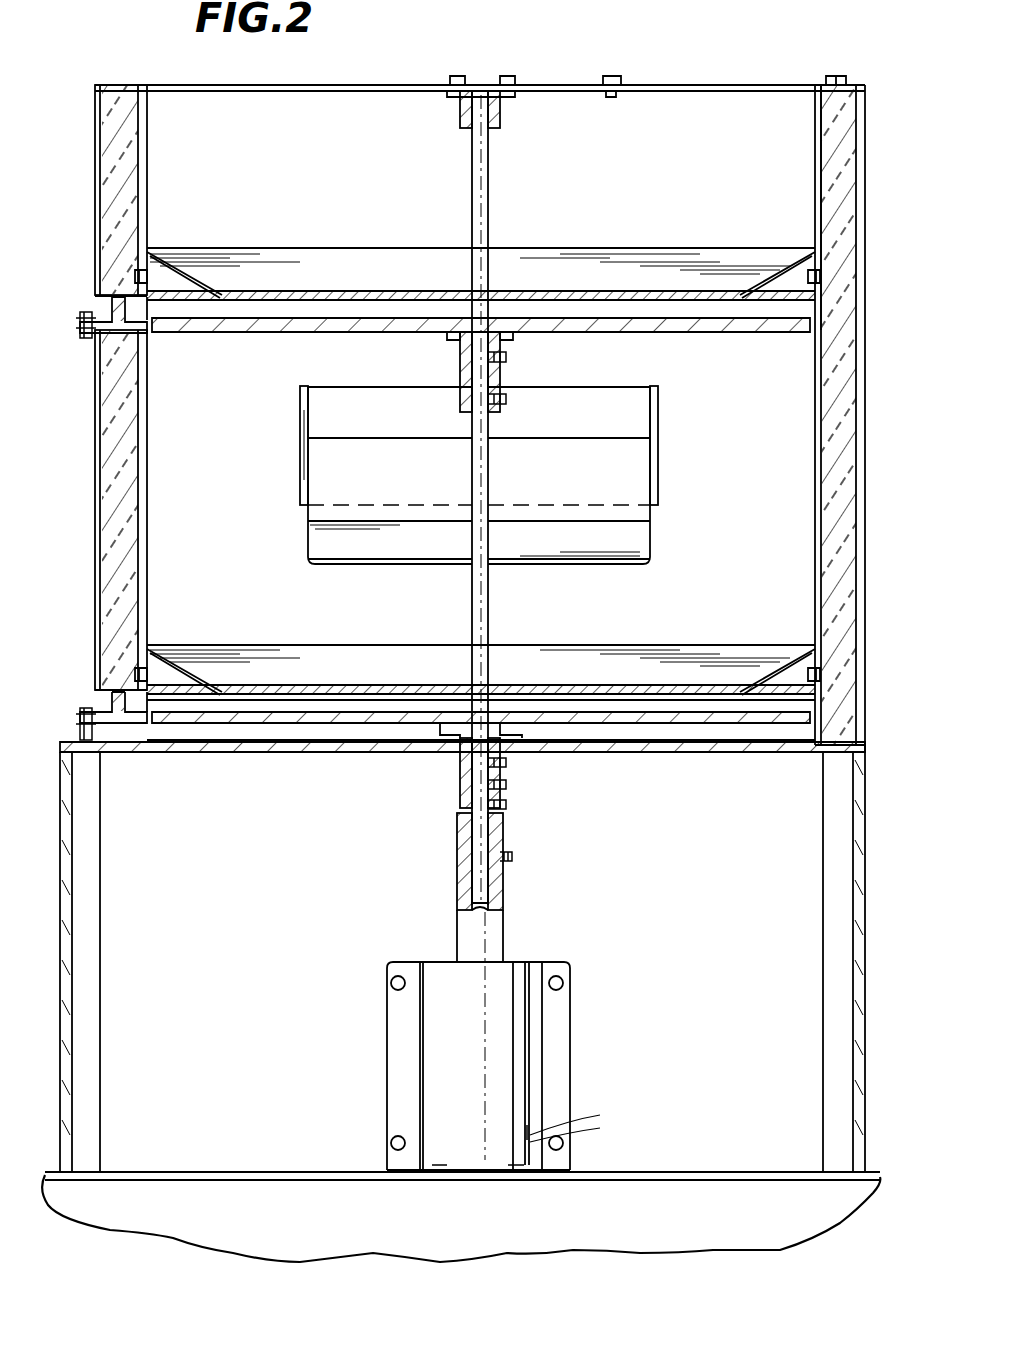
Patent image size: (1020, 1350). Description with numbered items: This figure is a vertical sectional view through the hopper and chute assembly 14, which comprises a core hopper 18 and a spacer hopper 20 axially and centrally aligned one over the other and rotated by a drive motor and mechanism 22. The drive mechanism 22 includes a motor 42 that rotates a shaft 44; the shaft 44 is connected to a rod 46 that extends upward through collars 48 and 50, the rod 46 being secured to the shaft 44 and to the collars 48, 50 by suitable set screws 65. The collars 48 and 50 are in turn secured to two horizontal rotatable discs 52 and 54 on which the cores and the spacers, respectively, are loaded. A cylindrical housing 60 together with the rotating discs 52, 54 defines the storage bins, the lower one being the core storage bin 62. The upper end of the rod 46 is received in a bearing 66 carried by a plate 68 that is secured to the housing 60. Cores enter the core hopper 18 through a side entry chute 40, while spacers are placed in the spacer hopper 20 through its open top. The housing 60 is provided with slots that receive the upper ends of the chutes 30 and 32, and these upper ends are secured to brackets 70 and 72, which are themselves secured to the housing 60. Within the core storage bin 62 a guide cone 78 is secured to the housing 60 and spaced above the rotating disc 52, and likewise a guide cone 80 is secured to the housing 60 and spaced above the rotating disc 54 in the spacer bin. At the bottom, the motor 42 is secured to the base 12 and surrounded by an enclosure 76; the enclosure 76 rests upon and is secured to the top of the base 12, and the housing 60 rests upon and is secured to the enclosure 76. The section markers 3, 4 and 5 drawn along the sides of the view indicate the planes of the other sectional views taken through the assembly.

The section line 3- 3 is at (70, 63).
The section line 4- 4 is at (30, 310).
The section line 5- 5 is at (30, 703).
The base 12 is at (678, 1246).
The hopper and chute assembly 14 is at (80, 98).
The core hopper 18 is at (800, 520).
The spacer hopper 20 is at (805, 164).
The drive motor and mechanism 22 is at (128, 990).
The chute 30 is at (136, 703).
The chute 32 is at (113, 310).
The side entry chute 40 is at (652, 478).
The motor 42 is at (542, 1032).
The shaft 44 is at (503, 898).
The rod 46 is at (482, 797).
The collar 48 is at (466, 785).
The collar 50 is at (462, 348).
The rotatable disc 52 is at (712, 725).
The rotatable disc 54 is at (742, 330).
The cylindrical housing 60 is at (866, 440).
The core storage bin 62 is at (754, 581).
The set screws 65 is at (506, 358).
The bearing 66 is at (500, 112).
The plate 68 is at (585, 83).
The bracket 70 is at (86, 745).
The bracket 72 is at (97, 338).
The enclosure 76 is at (72, 1042).
The guide cone 78 is at (776, 665).
The guide cone 80 is at (785, 262).